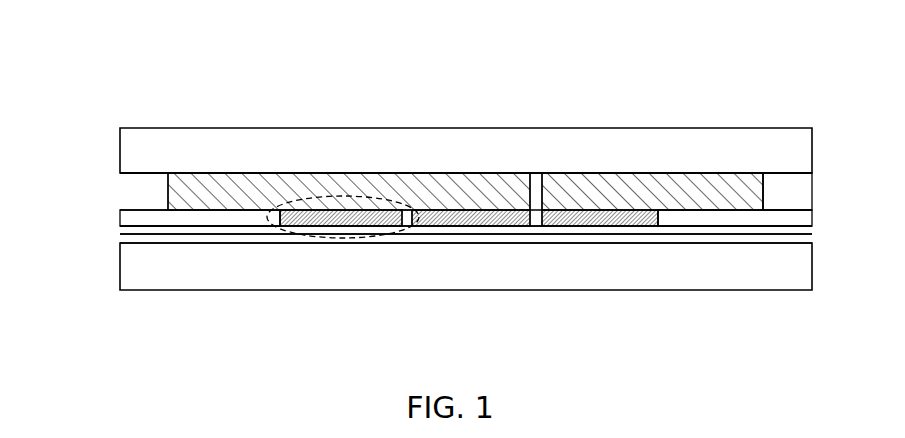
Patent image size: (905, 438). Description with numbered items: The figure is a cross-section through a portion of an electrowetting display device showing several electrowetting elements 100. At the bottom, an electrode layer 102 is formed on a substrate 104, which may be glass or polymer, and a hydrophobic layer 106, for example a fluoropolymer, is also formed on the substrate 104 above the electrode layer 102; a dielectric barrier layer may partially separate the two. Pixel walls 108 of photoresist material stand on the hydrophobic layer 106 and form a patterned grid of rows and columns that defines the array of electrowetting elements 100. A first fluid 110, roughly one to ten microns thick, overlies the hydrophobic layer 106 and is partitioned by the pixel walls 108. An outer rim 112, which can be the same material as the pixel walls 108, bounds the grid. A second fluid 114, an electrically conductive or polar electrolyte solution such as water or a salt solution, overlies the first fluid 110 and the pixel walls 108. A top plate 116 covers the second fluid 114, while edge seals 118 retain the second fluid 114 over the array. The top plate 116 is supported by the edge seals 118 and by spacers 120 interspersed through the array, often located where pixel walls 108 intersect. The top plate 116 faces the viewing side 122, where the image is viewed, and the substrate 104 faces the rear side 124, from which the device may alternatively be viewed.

The electrowetting element 100 is at (343, 238).
The electrode layer 102 is at (118, 240).
The substrate 104 is at (193, 276).
The hydrophobic layer 106 is at (118, 230).
The pixel walls 108 is at (535, 227).
The first fluid 110 is at (583, 227).
The outer rim 112 is at (118, 218).
The second fluid 114 is at (671, 173).
The top plate 116 is at (193, 157).
The edge seals 118 is at (812, 188).
The spacers 120 is at (535, 173).
The viewing side 122 is at (578, 39).
The rear side 124 is at (279, 322).